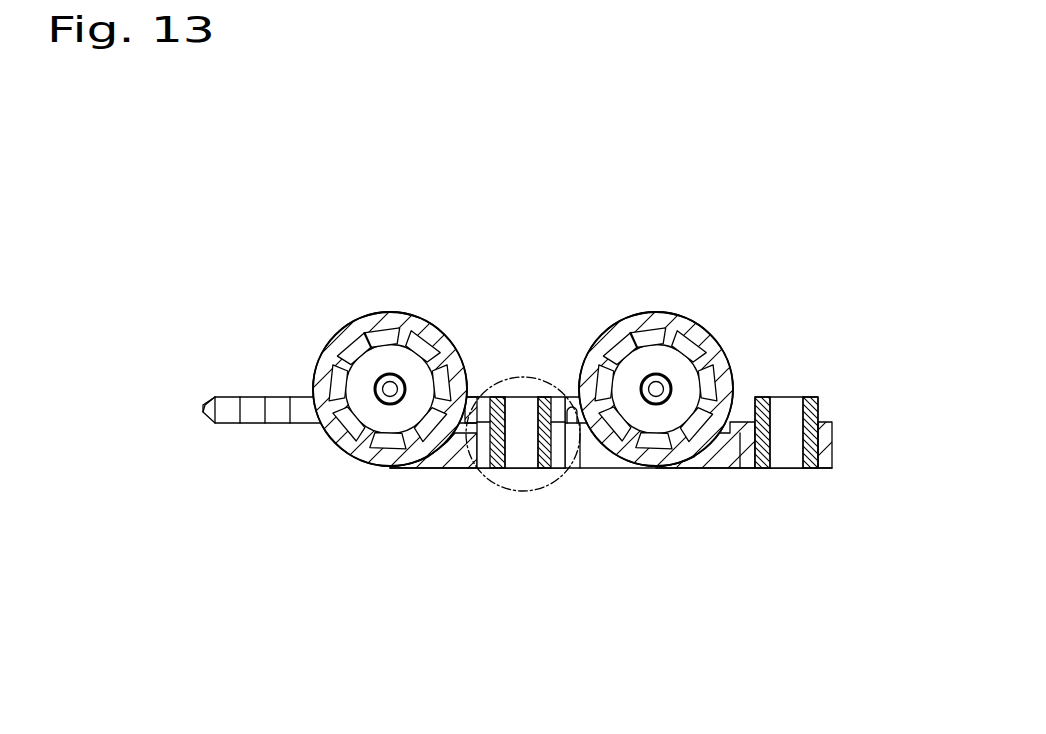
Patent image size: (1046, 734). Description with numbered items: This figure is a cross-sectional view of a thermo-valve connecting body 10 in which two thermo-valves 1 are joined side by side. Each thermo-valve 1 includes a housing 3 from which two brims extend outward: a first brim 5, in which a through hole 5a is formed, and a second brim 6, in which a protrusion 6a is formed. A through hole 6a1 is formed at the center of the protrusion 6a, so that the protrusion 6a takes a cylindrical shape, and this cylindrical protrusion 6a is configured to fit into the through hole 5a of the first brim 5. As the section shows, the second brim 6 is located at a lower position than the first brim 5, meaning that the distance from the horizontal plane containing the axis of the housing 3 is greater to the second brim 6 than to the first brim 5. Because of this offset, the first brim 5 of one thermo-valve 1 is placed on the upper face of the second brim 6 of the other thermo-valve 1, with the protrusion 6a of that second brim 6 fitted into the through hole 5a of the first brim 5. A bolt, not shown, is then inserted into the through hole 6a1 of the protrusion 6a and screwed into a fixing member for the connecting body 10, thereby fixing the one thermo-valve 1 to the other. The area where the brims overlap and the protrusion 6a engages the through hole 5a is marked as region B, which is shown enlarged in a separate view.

The thermo-valve connecting body 10 is at (216, 130).
The thermo-valve 1 is at (396, 306).
The housing 3 is at (344, 318).
The first brim 5 is at (283, 424).
The through hole 5a is at (248, 397).
The second brim 6 is at (567, 458).
The protrusion 6a is at (492, 468).
The through hole 6a1 is at (523, 455).
The region B is at (486, 486).